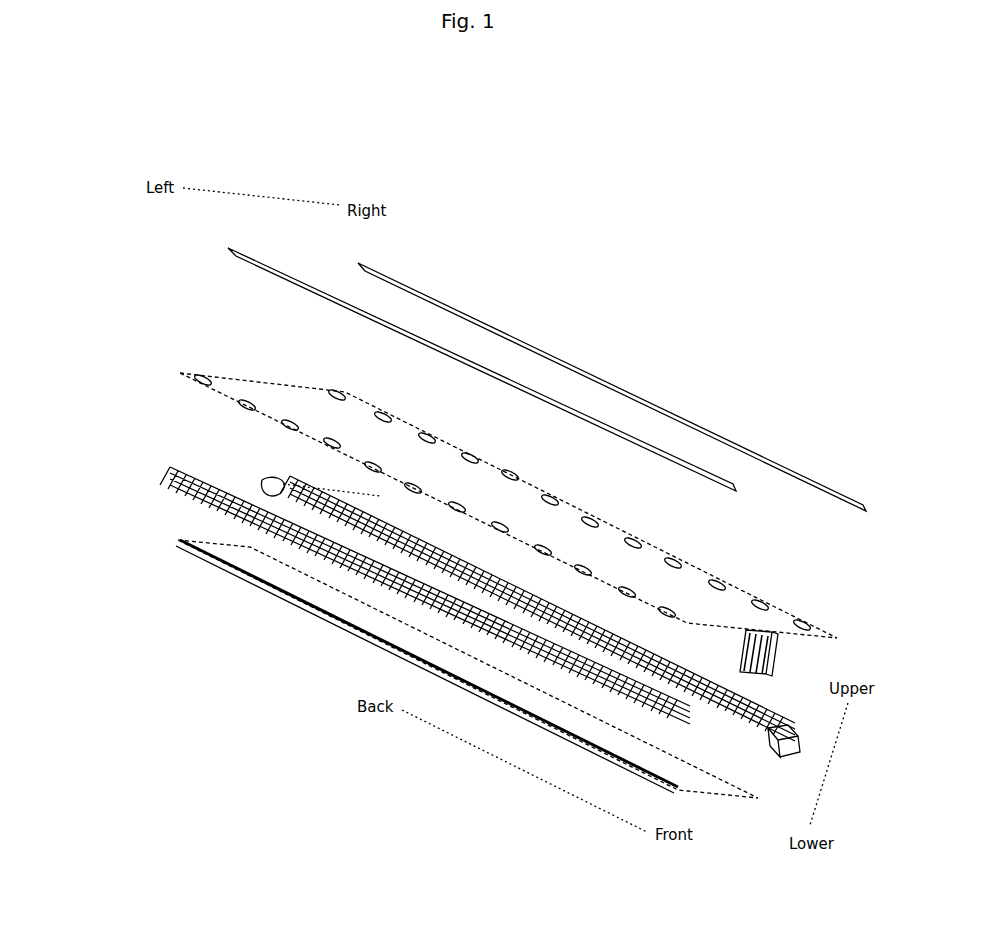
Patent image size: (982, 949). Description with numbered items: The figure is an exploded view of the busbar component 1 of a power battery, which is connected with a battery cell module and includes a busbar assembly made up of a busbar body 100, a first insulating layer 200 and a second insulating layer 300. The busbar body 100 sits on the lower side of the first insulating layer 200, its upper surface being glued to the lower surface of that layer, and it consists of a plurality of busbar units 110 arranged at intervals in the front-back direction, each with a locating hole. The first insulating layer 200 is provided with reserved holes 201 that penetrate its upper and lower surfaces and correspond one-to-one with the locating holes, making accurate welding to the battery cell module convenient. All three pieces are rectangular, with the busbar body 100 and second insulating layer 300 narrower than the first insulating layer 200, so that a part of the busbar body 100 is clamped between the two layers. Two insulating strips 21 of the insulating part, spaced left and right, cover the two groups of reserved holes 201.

The busbar component 1 is at (702, 315).
The insulating strip 21 is at (563, 355).
The first insulating layer 200 is at (288, 393).
The reserved hole 201 is at (730, 580).
The busbar unit 110 is at (200, 472).
The busbar body 100 is at (423, 573).
The second insulating layer 300 is at (347, 612).